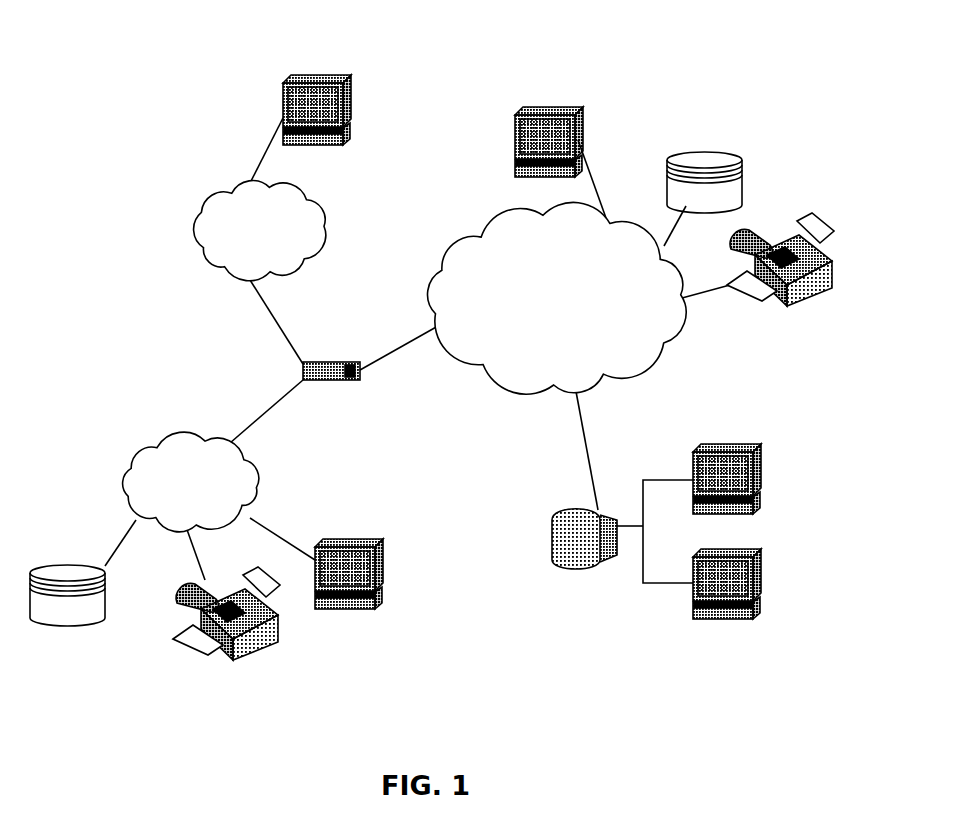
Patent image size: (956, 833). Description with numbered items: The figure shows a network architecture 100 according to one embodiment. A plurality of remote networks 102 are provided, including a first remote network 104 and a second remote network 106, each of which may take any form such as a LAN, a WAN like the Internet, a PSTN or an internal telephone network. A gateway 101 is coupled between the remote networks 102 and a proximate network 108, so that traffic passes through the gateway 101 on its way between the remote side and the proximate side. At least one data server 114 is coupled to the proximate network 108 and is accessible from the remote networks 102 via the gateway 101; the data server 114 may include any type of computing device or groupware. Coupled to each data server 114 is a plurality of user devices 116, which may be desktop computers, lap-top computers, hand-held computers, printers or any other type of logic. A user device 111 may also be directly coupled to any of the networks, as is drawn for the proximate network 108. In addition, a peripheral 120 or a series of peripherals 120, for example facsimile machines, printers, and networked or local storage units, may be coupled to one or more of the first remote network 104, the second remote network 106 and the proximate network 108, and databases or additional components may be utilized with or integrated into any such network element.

The network architecture 100 is at (228, 46).
The gateway 101 is at (318, 362).
The remote networks 102 is at (156, 348).
The first remote network 104 is at (122, 462).
The second remote network 106 is at (322, 203).
The proximate network 108 is at (660, 360).
The user device 111 is at (581, 113).
The data server 114 is at (553, 564).
The user devices 116 is at (351, 99).
The peripheral 120 is at (742, 160).